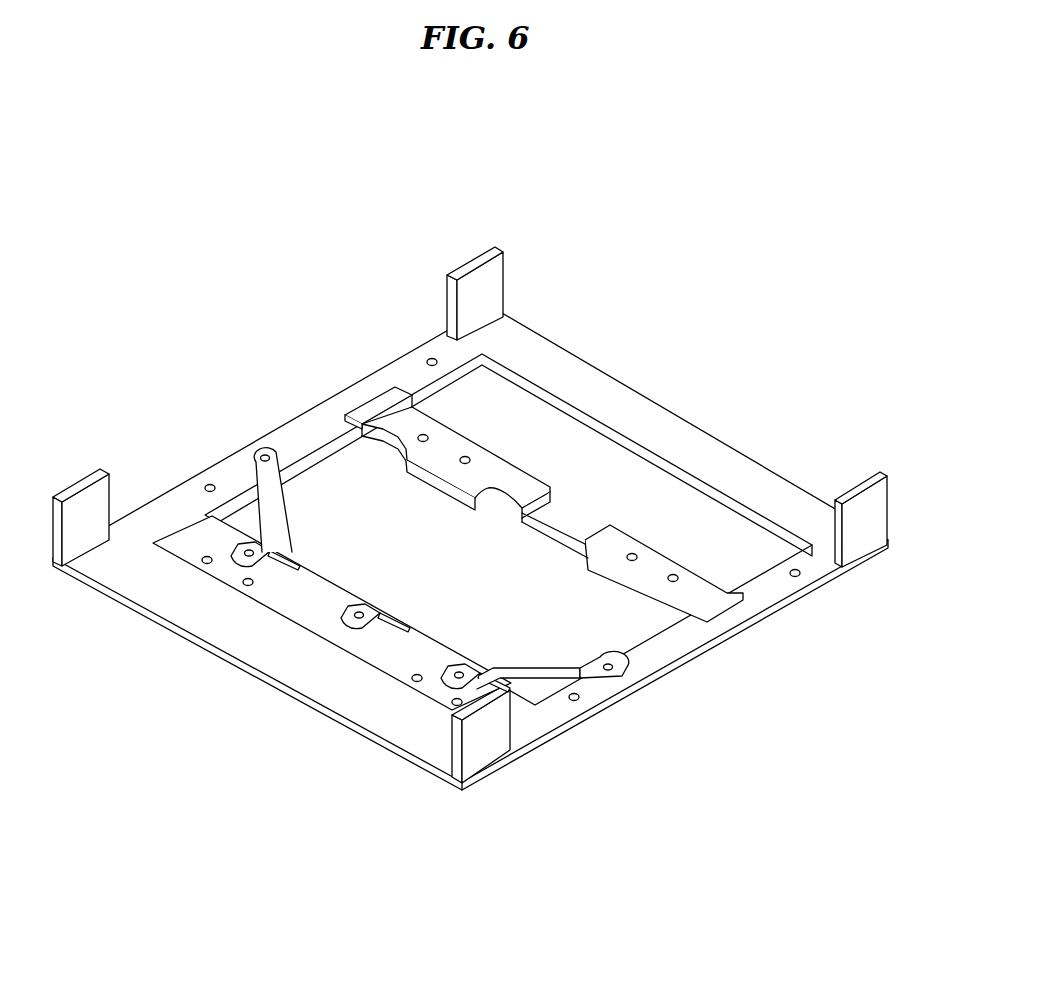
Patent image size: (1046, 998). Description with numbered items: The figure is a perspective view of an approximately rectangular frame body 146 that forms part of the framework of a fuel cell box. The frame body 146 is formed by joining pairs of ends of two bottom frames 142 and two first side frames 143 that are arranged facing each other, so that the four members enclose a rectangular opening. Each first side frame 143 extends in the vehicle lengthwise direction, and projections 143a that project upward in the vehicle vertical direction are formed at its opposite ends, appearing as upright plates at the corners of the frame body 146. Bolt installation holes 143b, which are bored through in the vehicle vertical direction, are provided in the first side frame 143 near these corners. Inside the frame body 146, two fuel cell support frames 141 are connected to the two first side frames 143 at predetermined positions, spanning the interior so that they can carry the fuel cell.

The frame body 146 is at (325, 273).
The bottom frame 142 is at (627, 420).
The first side frame 143 is at (293, 425).
The projection 143a is at (463, 262).
The bolt installation hole 143b is at (432, 355).
The fuel cell support frame 141 is at (690, 585).